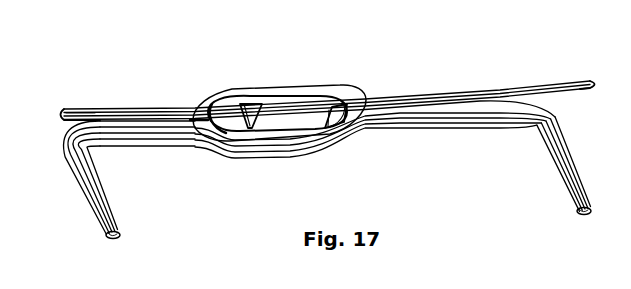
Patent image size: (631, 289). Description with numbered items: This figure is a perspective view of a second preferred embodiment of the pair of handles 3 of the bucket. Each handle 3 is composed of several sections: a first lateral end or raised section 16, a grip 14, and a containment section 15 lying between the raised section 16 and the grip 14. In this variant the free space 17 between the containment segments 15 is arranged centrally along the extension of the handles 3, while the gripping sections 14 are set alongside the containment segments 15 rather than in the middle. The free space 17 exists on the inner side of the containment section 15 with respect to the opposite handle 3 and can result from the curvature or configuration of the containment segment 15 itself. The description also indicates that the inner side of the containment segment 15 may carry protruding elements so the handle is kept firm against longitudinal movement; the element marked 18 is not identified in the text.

The handle 3 is at (183, 96).
The grip 14 is at (407, 93).
The containment section 15 is at (288, 92).
The raised section 16 is at (558, 78).
The free space 17 is at (226, 138).
The bridge outline 18 is at (231, 92).